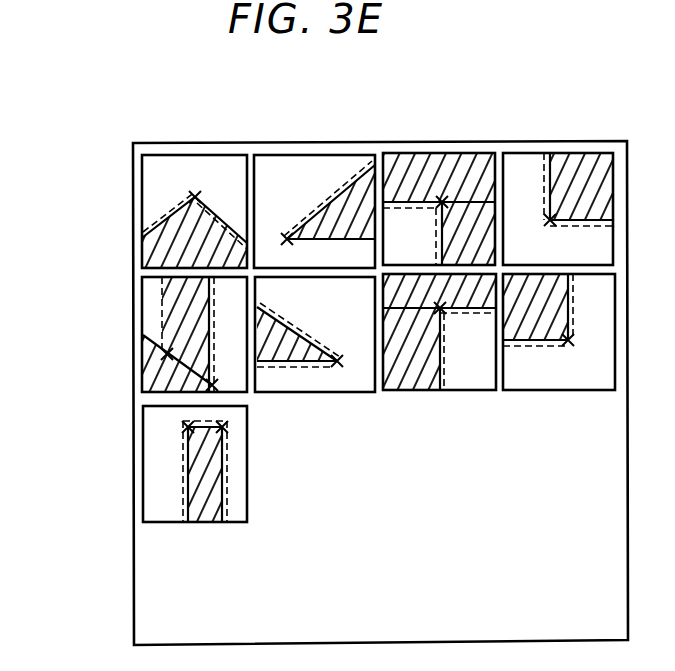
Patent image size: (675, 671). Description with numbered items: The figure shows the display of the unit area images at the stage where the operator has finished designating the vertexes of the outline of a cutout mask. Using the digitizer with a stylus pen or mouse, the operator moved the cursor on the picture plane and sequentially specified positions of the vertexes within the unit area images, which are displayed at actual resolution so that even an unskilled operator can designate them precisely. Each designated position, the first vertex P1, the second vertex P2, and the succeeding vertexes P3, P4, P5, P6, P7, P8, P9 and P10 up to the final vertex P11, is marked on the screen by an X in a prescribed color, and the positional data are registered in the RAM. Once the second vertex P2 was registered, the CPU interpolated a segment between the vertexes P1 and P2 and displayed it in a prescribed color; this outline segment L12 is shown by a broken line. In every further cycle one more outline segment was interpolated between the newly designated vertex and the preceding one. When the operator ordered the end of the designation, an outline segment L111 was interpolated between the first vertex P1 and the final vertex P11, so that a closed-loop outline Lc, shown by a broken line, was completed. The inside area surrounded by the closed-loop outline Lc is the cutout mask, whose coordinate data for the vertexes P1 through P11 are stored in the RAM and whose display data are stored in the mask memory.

The first vertex P1 is at (195, 196).
The second vertex P2 is at (287, 237).
The vertex P3 is at (441, 204).
The vertex P4 is at (549, 221).
The vertex P5 is at (569, 344).
The vertex P6 is at (442, 310).
The vertex P7 is at (337, 358).
The vertex P8 is at (214, 386).
The vertex P9 is at (223, 426).
The vertex P10 is at (188, 427).
The final vertex P11 is at (165, 355).
The outline segment L111 is at (152, 336).
The outline segment L12 is at (348, 102).
The closed-loop outline Lc is at (444, 362).